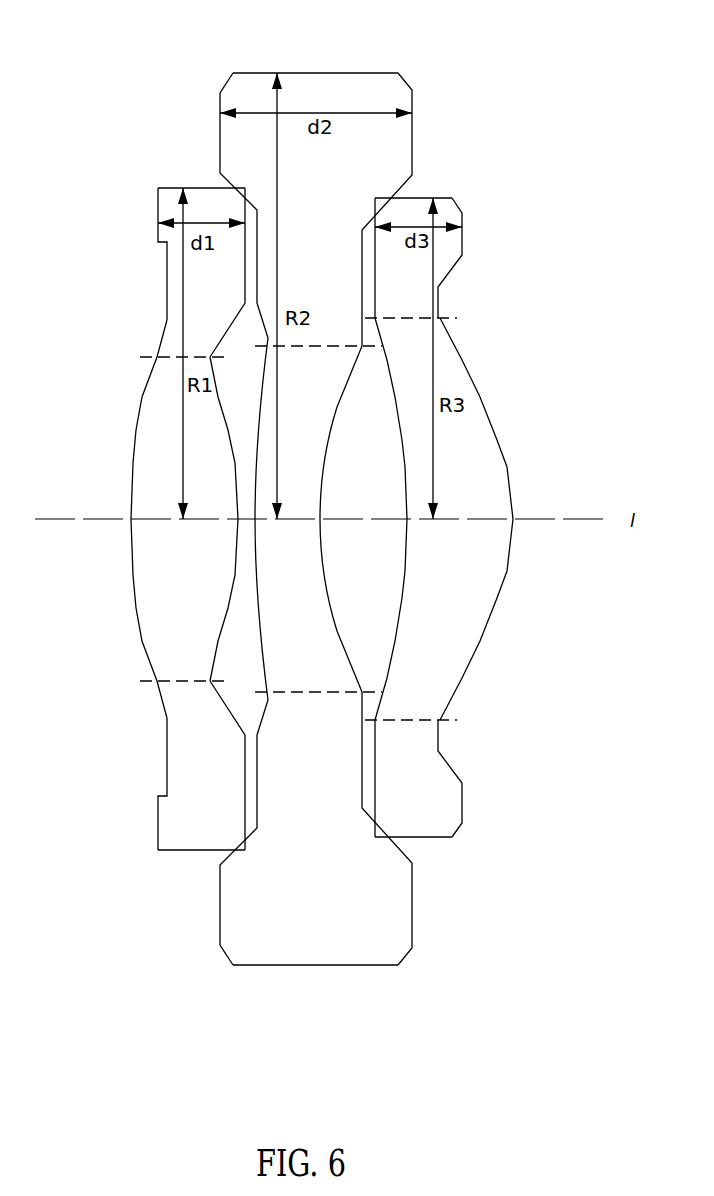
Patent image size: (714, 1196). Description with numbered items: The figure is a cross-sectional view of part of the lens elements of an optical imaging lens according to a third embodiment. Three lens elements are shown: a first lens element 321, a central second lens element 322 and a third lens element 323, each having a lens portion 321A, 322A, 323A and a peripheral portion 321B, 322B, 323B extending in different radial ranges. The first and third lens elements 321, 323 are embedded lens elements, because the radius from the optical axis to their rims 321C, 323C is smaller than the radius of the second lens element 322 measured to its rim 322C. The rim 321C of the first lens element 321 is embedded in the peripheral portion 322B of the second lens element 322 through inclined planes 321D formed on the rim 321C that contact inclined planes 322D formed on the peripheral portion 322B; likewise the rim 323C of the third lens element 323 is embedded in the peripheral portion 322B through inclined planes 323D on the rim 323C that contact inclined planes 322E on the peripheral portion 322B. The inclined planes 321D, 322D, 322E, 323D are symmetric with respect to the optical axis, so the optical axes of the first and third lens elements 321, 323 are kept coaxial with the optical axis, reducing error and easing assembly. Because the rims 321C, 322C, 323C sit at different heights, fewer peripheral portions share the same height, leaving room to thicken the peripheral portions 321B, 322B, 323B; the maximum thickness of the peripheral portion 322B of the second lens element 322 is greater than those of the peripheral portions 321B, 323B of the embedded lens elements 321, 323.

The first lens element 321 is at (144, 500).
The lens portion 321A is at (145, 462).
The peripheral portion 321B is at (172, 283).
The rim 321C is at (183, 188).
The inclined plane 321D is at (237, 197).
The second lens element 322 is at (323, 522).
The lens portion 322A is at (305, 500).
The peripheral portion 322B is at (340, 367).
The rim 322C is at (318, 72).
The inclined plane 322D is at (230, 185).
The inclined plane 322E is at (400, 177).
The third lens element 323 is at (480, 495).
The lens portion 323A is at (488, 497).
The peripheral portion 323B is at (445, 262).
The rim 323C is at (440, 197).
The inclined plane 323D is at (390, 206).